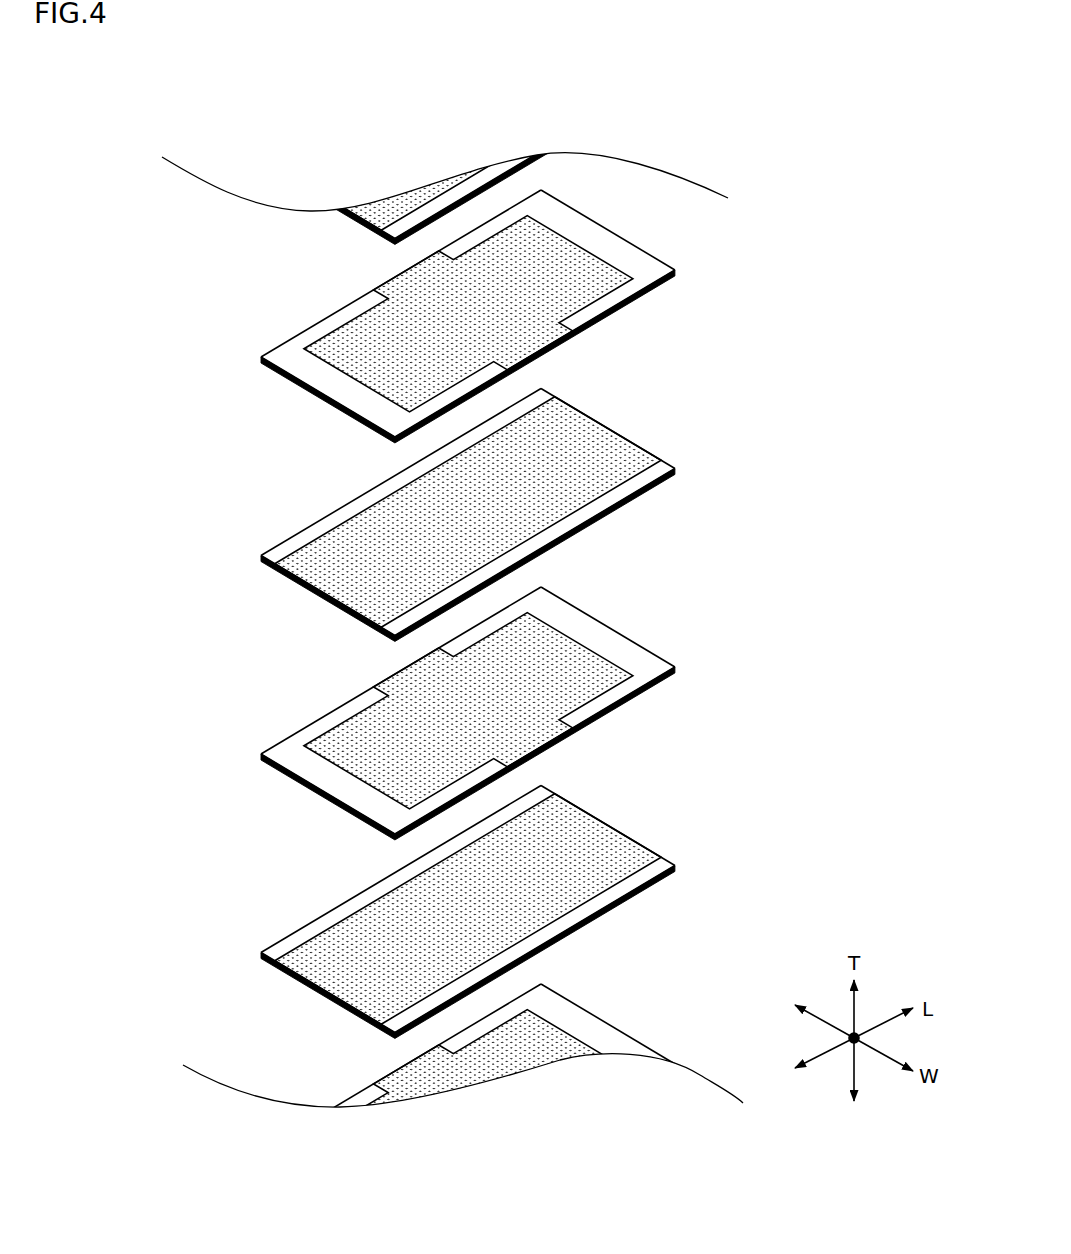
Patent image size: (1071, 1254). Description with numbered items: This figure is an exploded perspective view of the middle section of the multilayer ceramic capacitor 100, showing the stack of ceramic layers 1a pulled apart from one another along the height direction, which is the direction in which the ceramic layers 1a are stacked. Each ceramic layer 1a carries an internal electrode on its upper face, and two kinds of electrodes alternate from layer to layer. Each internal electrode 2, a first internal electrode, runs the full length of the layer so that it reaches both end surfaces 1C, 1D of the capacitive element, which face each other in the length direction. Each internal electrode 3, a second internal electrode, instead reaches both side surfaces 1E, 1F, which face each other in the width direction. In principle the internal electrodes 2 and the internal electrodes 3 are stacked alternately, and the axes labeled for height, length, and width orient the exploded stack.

The multilayer ceramic capacitor 100 is at (108, 78).
The end surface 1C is at (308, 405).
The end surface 1D is at (623, 216).
The side surface 1E is at (565, 364).
The side surface 1F is at (392, 259).
The ceramic layer 1a is at (677, 270).
The internal electrode 2 is at (362, 537).
The internal electrode 3 is at (403, 343).